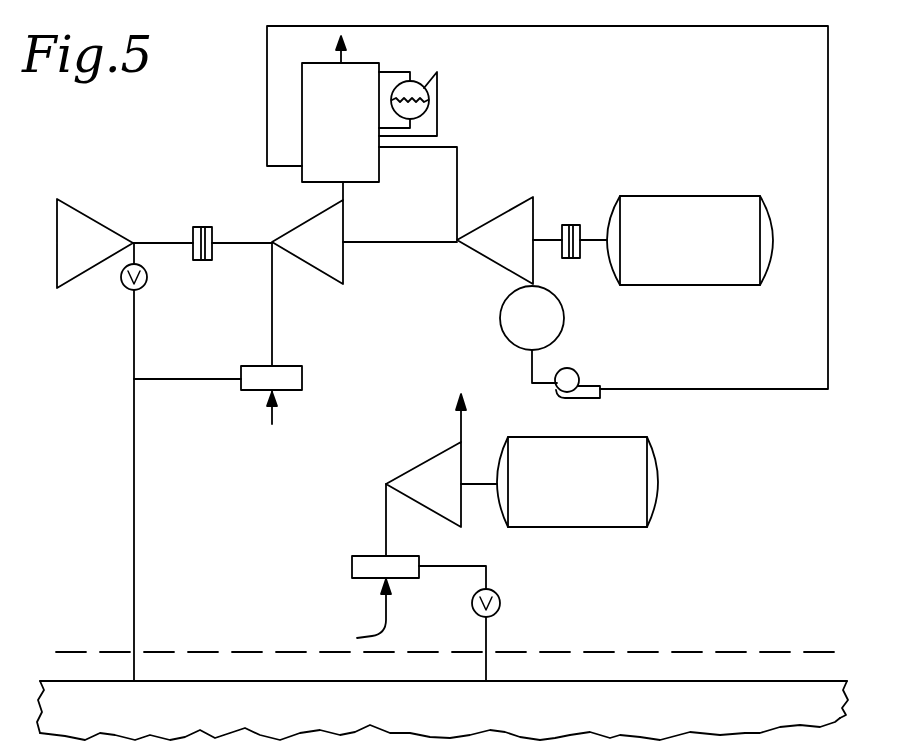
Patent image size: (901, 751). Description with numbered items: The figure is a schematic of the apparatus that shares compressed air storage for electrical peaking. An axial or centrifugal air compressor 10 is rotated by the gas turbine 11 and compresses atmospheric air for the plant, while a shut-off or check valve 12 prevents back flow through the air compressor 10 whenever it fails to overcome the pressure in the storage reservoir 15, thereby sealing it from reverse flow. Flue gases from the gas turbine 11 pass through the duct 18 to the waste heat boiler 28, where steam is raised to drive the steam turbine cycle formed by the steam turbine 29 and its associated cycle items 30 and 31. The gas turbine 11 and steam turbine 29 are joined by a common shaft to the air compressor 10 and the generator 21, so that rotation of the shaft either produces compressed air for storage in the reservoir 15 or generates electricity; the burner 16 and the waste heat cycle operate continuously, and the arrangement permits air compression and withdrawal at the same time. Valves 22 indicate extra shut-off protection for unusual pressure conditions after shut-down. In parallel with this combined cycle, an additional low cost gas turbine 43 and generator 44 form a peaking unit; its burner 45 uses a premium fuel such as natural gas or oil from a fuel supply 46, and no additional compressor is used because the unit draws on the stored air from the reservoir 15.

The air compressor 10 is at (96, 256).
The gas turbine 11 is at (326, 252).
The check valve 12 is at (121, 284).
The storage reservoir 15 is at (468, 721).
The burner 16 is at (302, 377).
The duct 18 is at (343, 190).
The generator 21 is at (700, 248).
The valve 22 is at (500, 601).
The waste heat boiler 28 is at (354, 124).
The steam turbine 29 is at (518, 250).
The steam turbine cycle component 30 is at (532, 334).
The steam turbine cycle component 31 is at (576, 374).
The gas turbine 43 is at (450, 494).
The generator 44 is at (608, 490).
The burner 45 is at (352, 560).
The fuel supply 46 is at (388, 628).